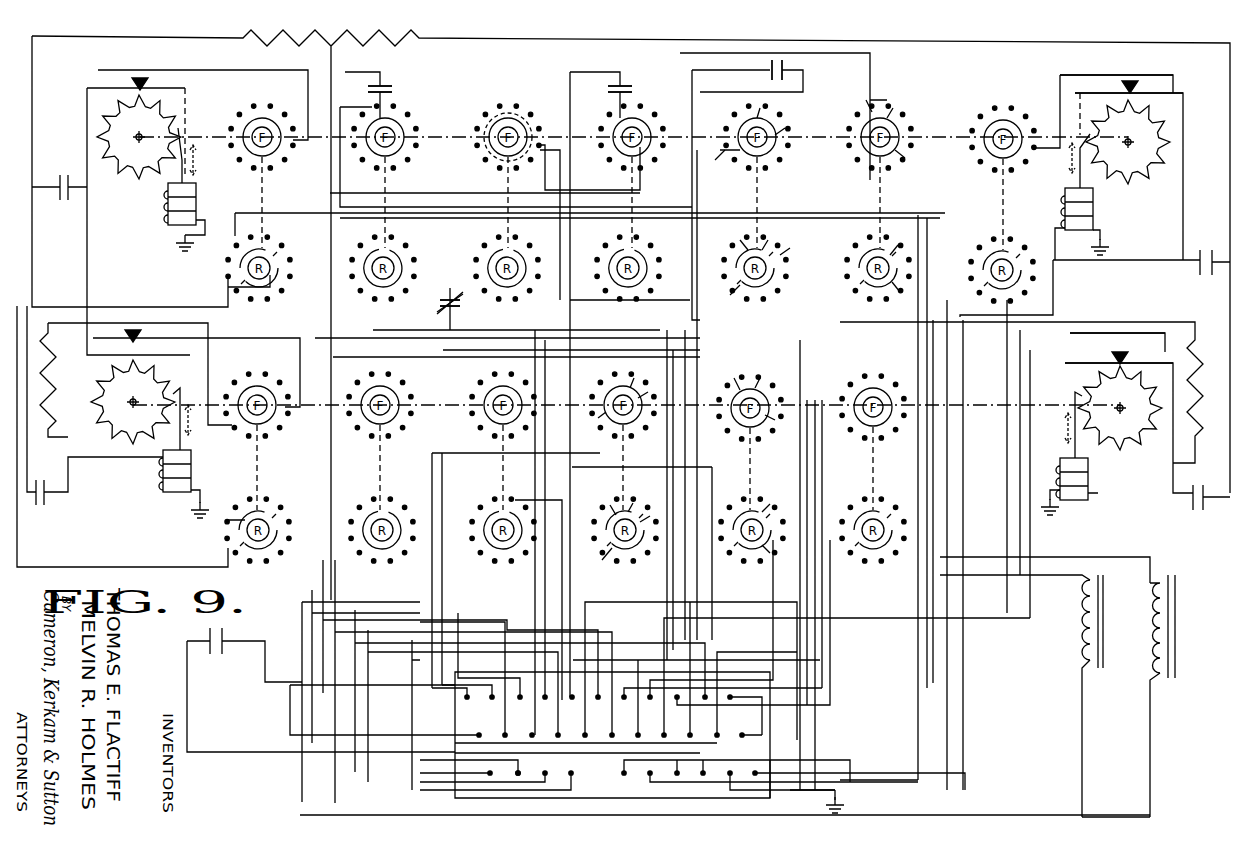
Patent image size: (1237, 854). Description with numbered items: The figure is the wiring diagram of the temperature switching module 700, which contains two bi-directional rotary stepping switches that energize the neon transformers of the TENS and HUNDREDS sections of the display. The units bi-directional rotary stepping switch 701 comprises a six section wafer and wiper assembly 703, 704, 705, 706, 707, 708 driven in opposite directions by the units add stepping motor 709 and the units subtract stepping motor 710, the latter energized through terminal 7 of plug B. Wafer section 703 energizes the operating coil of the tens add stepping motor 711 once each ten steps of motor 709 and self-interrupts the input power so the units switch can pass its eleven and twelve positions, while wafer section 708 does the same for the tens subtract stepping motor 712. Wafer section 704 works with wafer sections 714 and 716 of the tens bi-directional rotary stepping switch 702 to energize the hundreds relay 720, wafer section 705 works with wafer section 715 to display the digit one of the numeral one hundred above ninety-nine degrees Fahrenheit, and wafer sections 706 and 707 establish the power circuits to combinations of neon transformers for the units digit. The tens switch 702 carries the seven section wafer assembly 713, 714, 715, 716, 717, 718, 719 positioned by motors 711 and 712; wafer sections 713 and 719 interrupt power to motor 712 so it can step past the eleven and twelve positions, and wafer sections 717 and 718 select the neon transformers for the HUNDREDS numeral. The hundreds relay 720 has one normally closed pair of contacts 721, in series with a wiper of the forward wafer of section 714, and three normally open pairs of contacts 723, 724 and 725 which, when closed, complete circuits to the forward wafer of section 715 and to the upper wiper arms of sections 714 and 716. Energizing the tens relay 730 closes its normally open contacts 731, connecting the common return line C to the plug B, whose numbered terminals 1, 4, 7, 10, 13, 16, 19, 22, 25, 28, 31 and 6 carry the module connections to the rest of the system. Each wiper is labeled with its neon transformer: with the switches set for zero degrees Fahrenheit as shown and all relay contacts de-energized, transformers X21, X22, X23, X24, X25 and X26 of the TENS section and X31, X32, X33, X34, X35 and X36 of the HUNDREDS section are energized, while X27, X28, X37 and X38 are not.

The temperature switching module 700 is at (1197, 736).
The units bi-directional rotary stepping switch 701 is at (1178, 320).
The tens bi-directional rotary stepping switch 702 is at (1198, 97).
The wafer section 703 is at (254, 467).
The wafer section 704 is at (380, 467).
The wafer section 705 is at (503, 472).
The wafer section 706 is at (657, 455).
The wafer section 707 is at (780, 463).
The wafer section 708 is at (905, 462).
The units add bi-directional stepping motor 709 is at (130, 437).
The units subtract stepping motor 710 is at (1110, 433).
The tens add bi-directional stepping motor 711 is at (146, 160).
The tens subtract stepping motor 712 is at (1115, 165).
The wafer section 713 is at (261, 189).
The wafer section 714 is at (416, 187).
The wafer section 715 is at (508, 187).
The wafer section 716 is at (628, 187).
The wafer section 717 is at (786, 200).
The wafer section 718 is at (910, 200).
The wafer section 719 is at (1034, 211).
The hundreds relay 720 is at (1158, 580).
The normally closed pair of contacts 721 is at (458, 308).
The normally open pair of contacts 723 is at (224, 636).
The normally open pair of contacts 724 is at (393, 84).
The normally open pair of contacts 725 is at (633, 84).
The tens relay 730 is at (1078, 628).
The normally open contacts 731 is at (784, 68).
The terminal of plug B 1 is at (467, 707).
The terminal of plug B 4 is at (490, 707).
The terminal of plug B 7 is at (519, 707).
The terminal of plug B 10 is at (546, 707).
The terminal of plug B 13 is at (573, 707).
The terminal of plug B 16 is at (599, 707).
The terminal of plug B 19 is at (625, 707).
The terminal of plug B 22 is at (651, 707).
The terminal of plug B 25 is at (678, 711).
The terminal of plug B 28 is at (706, 707).
The terminal of plug B 31 is at (733, 707).
The terminal of plug B 6 is at (522, 762).
The plug B is at (771, 750).
The common return line C is at (763, 302).
The neon transformer X21 is at (775, 502).
The neon transformer X22 is at (590, 420).
The neon transformer X23 is at (778, 423).
The neon transformer X24 is at (777, 554).
The neon transformer X25 is at (723, 377).
The neon transformer X26 is at (602, 502).
The neon transformer X27 is at (656, 454).
The neon transformer X28 is at (602, 562).
The neon transformer X31 is at (906, 244).
The neon transformer X32 is at (712, 164).
The neon transformer X33 is at (912, 159).
The neon transformer X34 is at (905, 295).
The neon transformer X35 is at (857, 102).
The neon transformer X36 is at (732, 237).
The neon transformer X37 is at (792, 187).
The neon transformer X38 is at (726, 296).